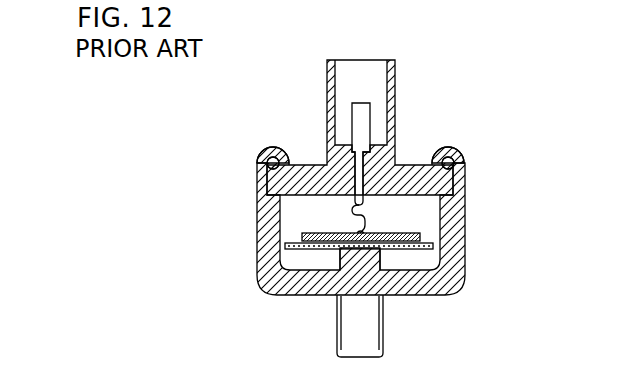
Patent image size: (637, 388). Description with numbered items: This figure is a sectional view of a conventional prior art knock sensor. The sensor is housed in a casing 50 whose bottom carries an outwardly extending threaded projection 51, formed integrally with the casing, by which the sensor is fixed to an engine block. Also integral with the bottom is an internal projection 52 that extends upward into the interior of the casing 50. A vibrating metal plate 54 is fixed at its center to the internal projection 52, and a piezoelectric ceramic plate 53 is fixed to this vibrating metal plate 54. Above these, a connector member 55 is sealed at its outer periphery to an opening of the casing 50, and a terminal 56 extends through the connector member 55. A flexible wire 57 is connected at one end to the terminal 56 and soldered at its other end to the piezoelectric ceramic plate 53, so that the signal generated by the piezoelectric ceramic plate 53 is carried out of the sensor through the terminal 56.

The casing 50 is at (263, 240).
The threaded projection 51 is at (382, 332).
The internal projection 52 is at (350, 258).
The piezoelectric ceramic plate 53 is at (303, 232).
The vibrating metal plate 54 is at (413, 247).
The connector member 55 is at (318, 165).
The terminal 56 is at (360, 180).
The flexible wire 57 is at (367, 220).